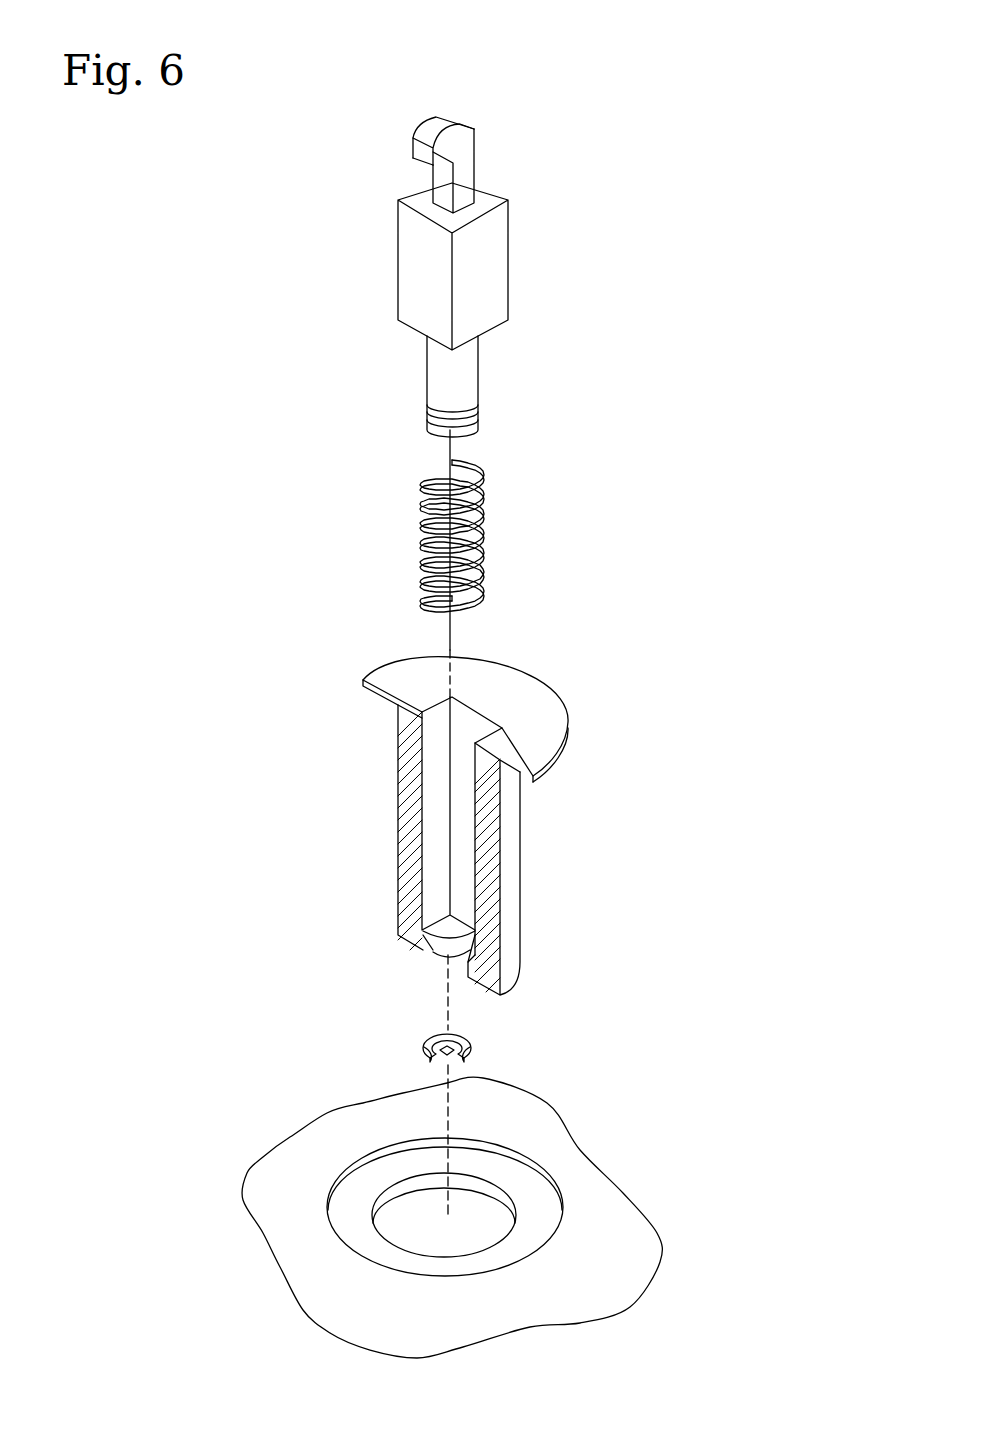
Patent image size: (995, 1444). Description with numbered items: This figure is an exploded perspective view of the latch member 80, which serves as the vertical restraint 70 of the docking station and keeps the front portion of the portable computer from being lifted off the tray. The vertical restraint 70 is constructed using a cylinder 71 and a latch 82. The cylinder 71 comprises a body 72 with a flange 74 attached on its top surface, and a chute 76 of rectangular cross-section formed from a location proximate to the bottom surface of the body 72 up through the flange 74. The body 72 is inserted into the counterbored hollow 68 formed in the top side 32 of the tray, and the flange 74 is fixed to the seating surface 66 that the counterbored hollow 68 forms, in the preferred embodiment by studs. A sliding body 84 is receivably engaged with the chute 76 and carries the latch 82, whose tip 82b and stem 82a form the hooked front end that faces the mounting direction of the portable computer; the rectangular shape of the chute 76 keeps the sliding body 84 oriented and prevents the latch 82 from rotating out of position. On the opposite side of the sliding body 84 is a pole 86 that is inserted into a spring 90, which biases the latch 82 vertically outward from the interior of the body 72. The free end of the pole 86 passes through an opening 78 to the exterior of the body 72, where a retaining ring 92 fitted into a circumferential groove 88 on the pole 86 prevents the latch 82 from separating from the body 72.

The vertical restraint 70 is at (252, 211).
The latch member 80 is at (527, 130).
The latch 82 is at (463, 165).
The hook stem 82a is at (433, 178).
The hook tip 82b is at (465, 128).
The sliding body 84 is at (490, 272).
The pole 86 is at (463, 368).
The circumferential groove 88 is at (477, 402).
The spring 90 is at (470, 525).
The cylinder 71 is at (607, 695).
The flange 74 is at (550, 738).
The body 72 is at (515, 858).
The chute 76 is at (430, 846).
The opening 78 is at (435, 952).
The retaining ring 92 is at (425, 1047).
The top side 32 is at (632, 1262).
The seating surface 66 is at (538, 1203).
The counterbored hollow 68 is at (480, 1217).